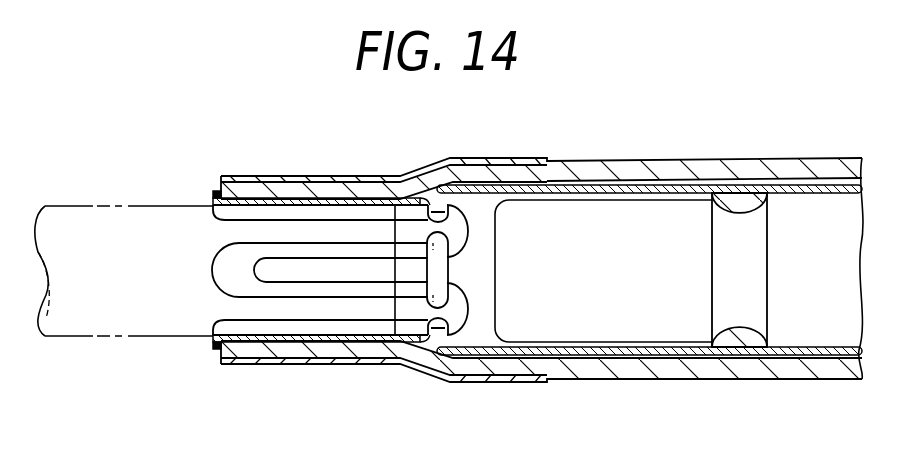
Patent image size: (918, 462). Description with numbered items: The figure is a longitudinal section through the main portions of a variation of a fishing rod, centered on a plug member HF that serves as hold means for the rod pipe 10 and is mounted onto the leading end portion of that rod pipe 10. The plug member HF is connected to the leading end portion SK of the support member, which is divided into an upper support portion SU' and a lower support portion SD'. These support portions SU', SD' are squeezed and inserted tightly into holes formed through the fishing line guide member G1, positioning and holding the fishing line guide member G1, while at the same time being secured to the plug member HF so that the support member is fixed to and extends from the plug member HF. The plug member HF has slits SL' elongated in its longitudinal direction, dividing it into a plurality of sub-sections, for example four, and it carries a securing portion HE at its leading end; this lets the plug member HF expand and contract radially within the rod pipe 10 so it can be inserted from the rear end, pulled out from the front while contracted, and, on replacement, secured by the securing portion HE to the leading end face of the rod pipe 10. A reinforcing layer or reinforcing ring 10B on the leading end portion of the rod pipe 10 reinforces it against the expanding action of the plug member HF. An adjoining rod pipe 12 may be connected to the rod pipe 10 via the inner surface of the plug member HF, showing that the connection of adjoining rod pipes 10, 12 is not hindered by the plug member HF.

The adjoining rod pipe 12 is at (160, 204).
The reinforcing layer or reinforcing ring 10B is at (278, 177).
The rod pipe 10 is at (648, 172).
The upper support portion SU' is at (649, 143).
The lower support portion SD' is at (649, 393).
The fishing line guide member G1 is at (748, 200).
The securing portion HE is at (214, 344).
The plug member HF is at (347, 330).
The slits SL' is at (320, 337).
The leading end portion of the support member SK is at (444, 333).